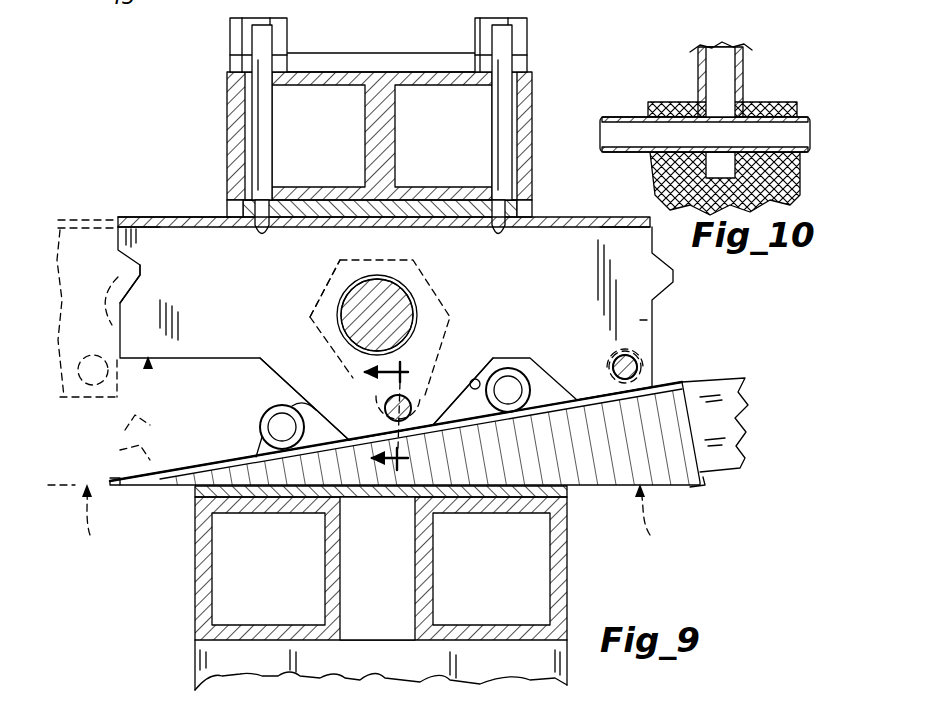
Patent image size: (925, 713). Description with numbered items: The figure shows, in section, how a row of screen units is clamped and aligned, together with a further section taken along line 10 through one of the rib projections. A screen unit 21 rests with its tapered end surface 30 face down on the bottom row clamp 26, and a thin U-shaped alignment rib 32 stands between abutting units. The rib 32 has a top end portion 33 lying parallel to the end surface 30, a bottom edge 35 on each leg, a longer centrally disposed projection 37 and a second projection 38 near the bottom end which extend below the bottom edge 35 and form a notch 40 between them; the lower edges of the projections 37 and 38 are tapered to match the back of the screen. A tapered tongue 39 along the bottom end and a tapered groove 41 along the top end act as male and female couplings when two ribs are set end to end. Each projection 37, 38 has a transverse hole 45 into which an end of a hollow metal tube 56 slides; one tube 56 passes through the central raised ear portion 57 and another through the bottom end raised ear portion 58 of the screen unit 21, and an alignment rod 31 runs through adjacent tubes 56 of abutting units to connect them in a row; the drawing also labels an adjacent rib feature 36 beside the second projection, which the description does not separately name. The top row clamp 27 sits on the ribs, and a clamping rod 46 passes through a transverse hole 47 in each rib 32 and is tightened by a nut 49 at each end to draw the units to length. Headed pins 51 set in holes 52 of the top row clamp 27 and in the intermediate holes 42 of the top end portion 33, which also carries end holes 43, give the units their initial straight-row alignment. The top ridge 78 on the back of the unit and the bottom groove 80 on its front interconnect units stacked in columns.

In FIG. 9, the section line 10— 10 is at (369, 418).
In FIG. 9, the screen unit 21 is at (358, 522).
In FIG. 9, the bottom row clamp 26 is at (568, 592).
In FIG. 9, the top row clamp 27 is at (399, 135).
In FIG. 9, the tapered end surface 30 is at (160, 490).
In FIG. 9, the alignment rod 31 is at (383, 417).
In FIG. 10, the alignment rod 31 is at (633, 138).
In FIG. 9, the alignment rib 32 is at (72, 212).
In FIG. 10, the alignment rib 32 is at (735, 83).
In FIG. 9, the top end portion 33 is at (208, 217).
In FIG. 9, the bottom edge 35 is at (203, 360).
In FIG. 9, the right lug 36 is at (475, 380).
In FIG. 9, the centrally disposed projection 37 is at (318, 388).
In FIG. 9, the second projection 38 is at (579, 385).
In FIG. 9, the tapered tongue 39 is at (118, 332).
In FIG. 9, the notch 40 is at (402, 228).
In FIG. 9, the tapered groove 41 is at (143, 276).
In FIG. 9, the intermediate hole 42 is at (262, 236).
In FIG. 9, the end hole 43 is at (150, 217).
In FIG. 9, the transverse hole 45 is at (627, 352).
In FIG. 9, the clamping rod 46 is at (378, 300).
In FIG. 9, the transverse hole 47 is at (352, 298).
In FIG. 9, the nut 49 is at (305, 311).
In FIG. 9, the pin 51 is at (252, 123).
In FIG. 9, the hole 52 is at (266, 96).
In FIG. 9, the hollow metal tube 56 is at (617, 357).
In FIG. 10, the hollow metal tube 56 is at (632, 113).
In FIG. 9, the central raised ear portion 57 is at (443, 364).
In FIG. 9, the bottom end raised ear portion 58 is at (640, 320).
In FIG. 9, the top ridge 78 is at (117, 480).
In FIG. 9, the bottom groove 80 is at (690, 485).